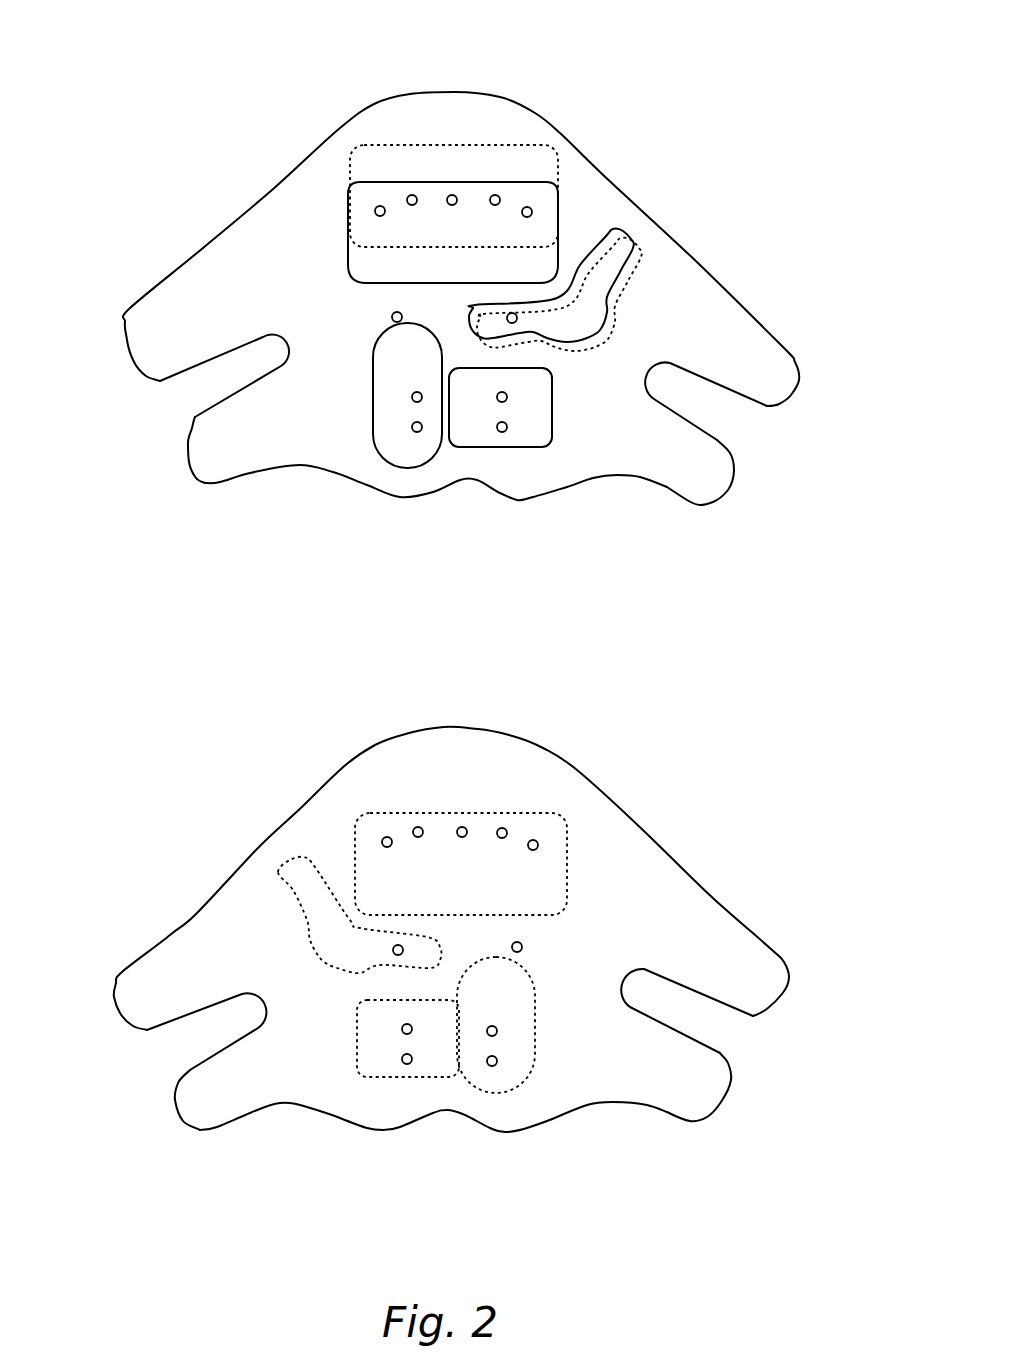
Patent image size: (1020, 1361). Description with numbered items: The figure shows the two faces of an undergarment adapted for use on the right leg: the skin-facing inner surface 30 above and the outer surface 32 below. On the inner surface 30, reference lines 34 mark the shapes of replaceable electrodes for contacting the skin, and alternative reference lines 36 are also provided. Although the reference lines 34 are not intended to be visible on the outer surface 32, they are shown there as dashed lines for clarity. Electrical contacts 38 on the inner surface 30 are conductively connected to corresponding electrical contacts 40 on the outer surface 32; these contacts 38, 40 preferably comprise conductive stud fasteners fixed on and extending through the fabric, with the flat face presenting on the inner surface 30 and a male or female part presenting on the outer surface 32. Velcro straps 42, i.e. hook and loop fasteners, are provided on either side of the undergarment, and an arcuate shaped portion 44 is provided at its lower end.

The inner surface 30 is at (721, 326).
The outer surface 32 is at (681, 892).
The reference lines 34 is at (375, 181).
The alternative reference lines 36 is at (388, 143).
The electrical contacts 38 is at (404, 198).
The electrical contacts 40 is at (465, 828).
The Velcro straps 42 is at (205, 450).
The arcuate shaped portion 44 is at (480, 482).